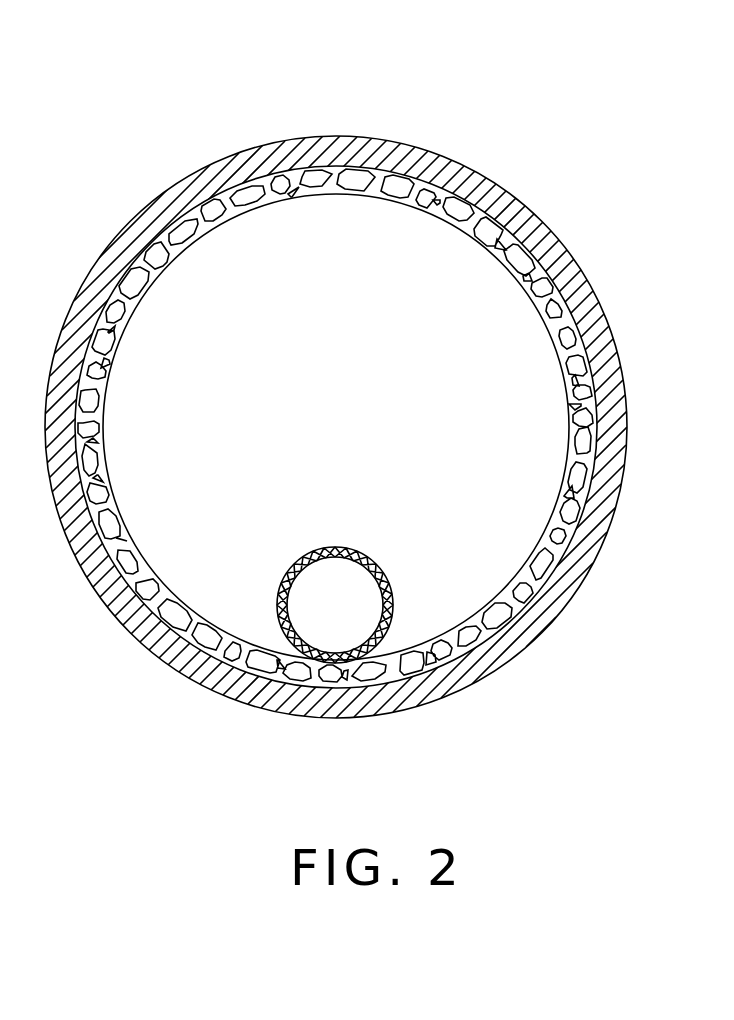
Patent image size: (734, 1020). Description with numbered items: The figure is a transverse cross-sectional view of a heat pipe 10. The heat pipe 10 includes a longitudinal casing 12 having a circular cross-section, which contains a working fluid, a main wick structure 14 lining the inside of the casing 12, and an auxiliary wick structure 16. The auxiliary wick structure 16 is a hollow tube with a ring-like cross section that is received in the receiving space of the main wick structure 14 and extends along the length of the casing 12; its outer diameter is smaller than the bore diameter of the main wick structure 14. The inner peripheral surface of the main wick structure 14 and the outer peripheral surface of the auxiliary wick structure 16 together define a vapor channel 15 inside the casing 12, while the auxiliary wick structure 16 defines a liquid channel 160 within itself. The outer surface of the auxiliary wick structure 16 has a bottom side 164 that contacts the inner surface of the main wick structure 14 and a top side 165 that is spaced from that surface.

The heat pipe 10 is at (248, 88).
The casing 12 is at (545, 232).
The main wick structure 14 is at (572, 278).
The vapor channel 15 is at (505, 417).
The auxiliary wick structure 16 is at (391, 655).
The liquid channel 160 is at (357, 618).
The bottom side 164 is at (352, 663).
The top side 165 is at (337, 549).